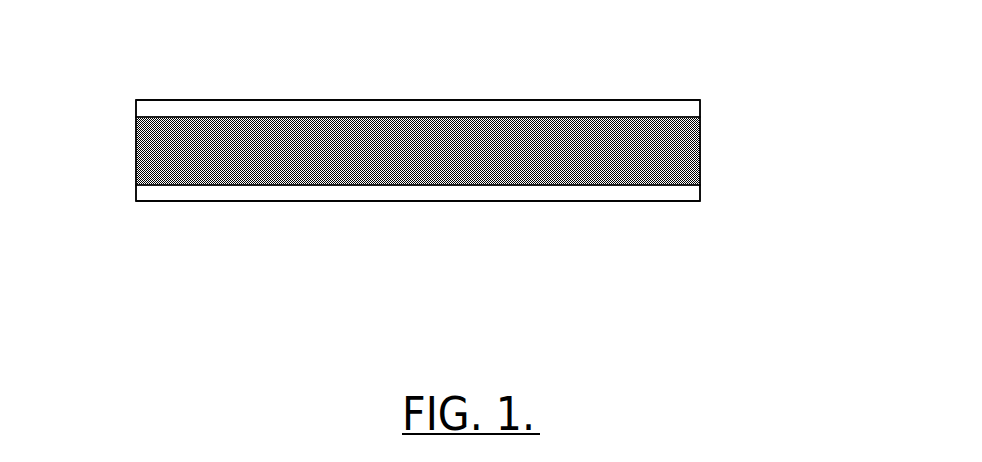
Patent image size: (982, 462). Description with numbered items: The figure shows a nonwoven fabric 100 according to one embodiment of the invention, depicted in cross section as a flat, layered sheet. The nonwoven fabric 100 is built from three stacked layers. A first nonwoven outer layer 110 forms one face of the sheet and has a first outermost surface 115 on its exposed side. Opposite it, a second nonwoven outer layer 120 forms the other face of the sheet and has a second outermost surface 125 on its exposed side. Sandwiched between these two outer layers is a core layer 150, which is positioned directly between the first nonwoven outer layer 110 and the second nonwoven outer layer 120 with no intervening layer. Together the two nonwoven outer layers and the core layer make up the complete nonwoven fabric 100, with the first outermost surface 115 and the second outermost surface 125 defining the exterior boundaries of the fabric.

The nonwoven fabric 100 is at (437, 171).
The first nonwoven outer layer 110 is at (701, 190).
The first outermost surface 115 is at (400, 200).
The second nonwoven outer layer 120 is at (701, 110).
The second outermost surface 125 is at (470, 100).
The core layer 150 is at (702, 150).